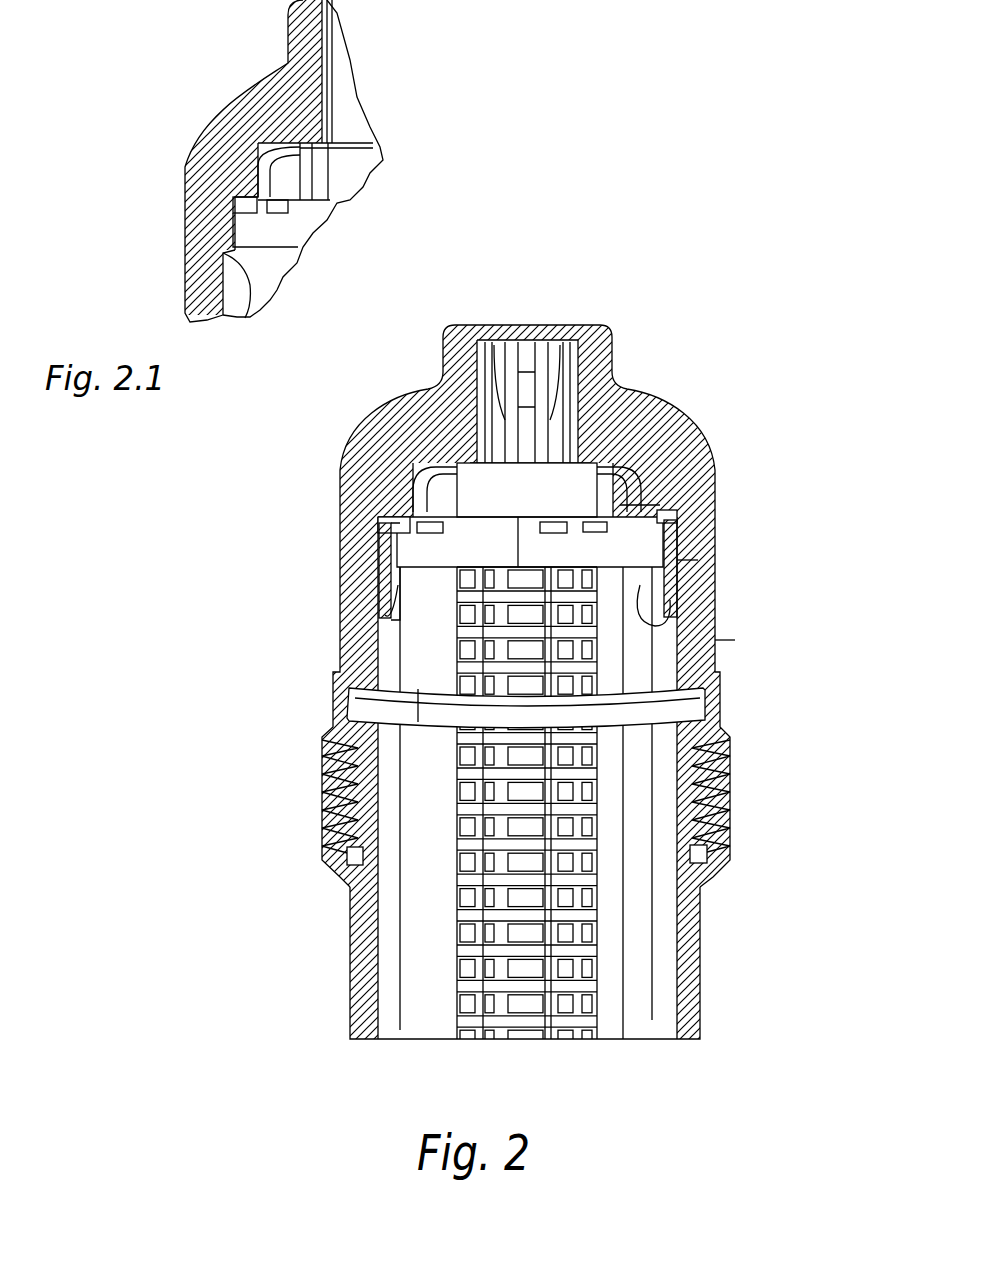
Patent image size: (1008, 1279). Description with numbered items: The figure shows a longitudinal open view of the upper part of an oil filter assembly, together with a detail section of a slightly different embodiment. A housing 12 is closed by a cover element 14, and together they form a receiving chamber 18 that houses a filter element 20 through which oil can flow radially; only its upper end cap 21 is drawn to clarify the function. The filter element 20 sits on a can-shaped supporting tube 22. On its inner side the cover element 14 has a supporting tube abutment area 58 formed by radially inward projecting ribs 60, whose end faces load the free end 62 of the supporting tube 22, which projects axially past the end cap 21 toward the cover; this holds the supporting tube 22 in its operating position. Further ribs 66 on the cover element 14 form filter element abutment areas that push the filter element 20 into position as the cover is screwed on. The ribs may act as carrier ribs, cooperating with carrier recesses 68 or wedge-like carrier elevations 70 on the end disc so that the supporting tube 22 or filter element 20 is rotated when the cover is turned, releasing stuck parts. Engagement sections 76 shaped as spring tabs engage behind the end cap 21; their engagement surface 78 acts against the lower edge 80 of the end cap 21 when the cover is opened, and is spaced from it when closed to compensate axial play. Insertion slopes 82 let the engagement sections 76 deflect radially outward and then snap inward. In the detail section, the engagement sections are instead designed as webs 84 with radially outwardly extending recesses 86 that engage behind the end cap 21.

In FIG. 2, the housing 12 is at (688, 975).
In FIG. 2.1, the cover element 14 is at (244, 161).
In FIG. 2, the cover element 14 is at (697, 608).
In FIG. 2, the receiving chamber 18 is at (650, 935).
In FIG. 2, the filter element 20 is at (717, 675).
In FIG. 2.1, the end cap 21 is at (307, 213).
In FIG. 2, the end cap 21 is at (690, 526).
In FIG. 2, the supporting tube 22 is at (600, 880).
In FIG. 2.1, the supporting tube abutment area 58 is at (350, 123).
In FIG. 2, the supporting tube abutment area 58 is at (495, 440).
In FIG. 2, the ribs 60 is at (558, 345).
In FIG. 2.1, the free end 62 is at (310, 157).
In FIG. 2, the free end 62 is at (467, 477).
In FIG. 2.1, the ribs 66 is at (258, 173).
In FIG. 2, the ribs 66 is at (413, 497).
In FIG. 2.1, the carrier recesses 68 is at (235, 208).
In FIG. 2, the carrier recesses 68 is at (380, 521).
In FIG. 2.1, the carrier elevations 70 is at (285, 187).
In FIG. 2, the carrier elevations 70 is at (562, 513).
In FIG. 2, the engagement sections 76 is at (673, 580).
In FIG. 2, the engagement surface 78 is at (697, 640).
In FIG. 2, the lower edge 80 is at (403, 620).
In FIG. 2.1, the insertion slopes 82 is at (250, 307).
In FIG. 2, the insertion slopes 82 is at (715, 613).
In FIG. 2.1, the webs 84 is at (225, 258).
In FIG. 2.1, the recesses 86 is at (237, 245).